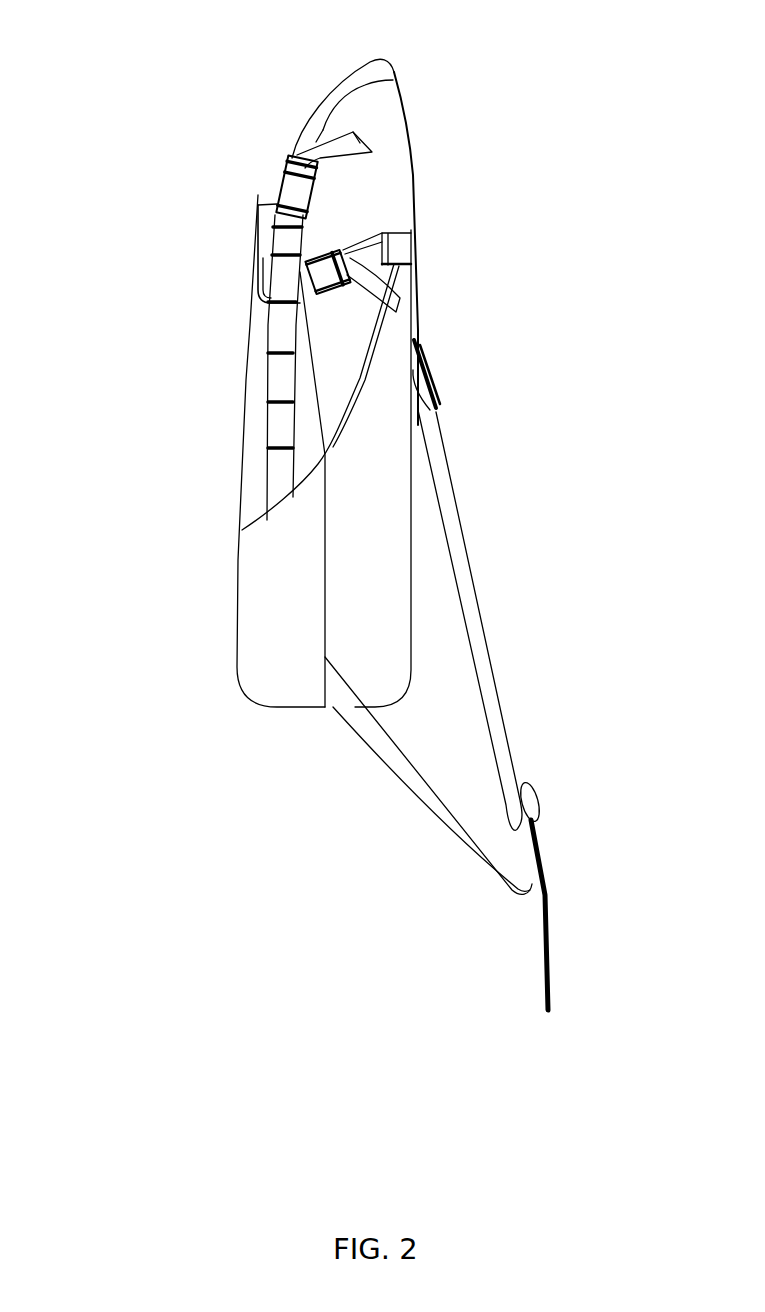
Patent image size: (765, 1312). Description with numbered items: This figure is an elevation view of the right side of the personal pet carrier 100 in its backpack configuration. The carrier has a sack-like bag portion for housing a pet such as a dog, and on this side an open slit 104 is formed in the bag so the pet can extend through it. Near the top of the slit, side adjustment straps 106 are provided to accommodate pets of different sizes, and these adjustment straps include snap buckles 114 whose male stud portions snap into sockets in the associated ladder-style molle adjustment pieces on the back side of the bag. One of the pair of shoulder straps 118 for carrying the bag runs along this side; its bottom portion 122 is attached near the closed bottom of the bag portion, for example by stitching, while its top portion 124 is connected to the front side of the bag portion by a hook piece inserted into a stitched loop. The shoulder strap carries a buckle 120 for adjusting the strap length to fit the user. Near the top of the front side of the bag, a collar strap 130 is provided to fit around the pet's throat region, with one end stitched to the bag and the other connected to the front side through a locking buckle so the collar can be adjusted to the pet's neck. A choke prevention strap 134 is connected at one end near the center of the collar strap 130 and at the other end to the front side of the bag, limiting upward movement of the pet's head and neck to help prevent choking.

The personal pet carrier 100 is at (150, 178).
The open slit 104 is at (357, 405).
The side adjustment straps 106 is at (372, 253).
The snap buckles 114 is at (328, 252).
The shoulder straps 118 is at (518, 632).
The buckles 120 is at (533, 797).
The bottom portion 122 is at (324, 665).
The top portion 124 is at (418, 347).
The collar strap 130 is at (333, 80).
The choke prevention strap 134 is at (413, 137).